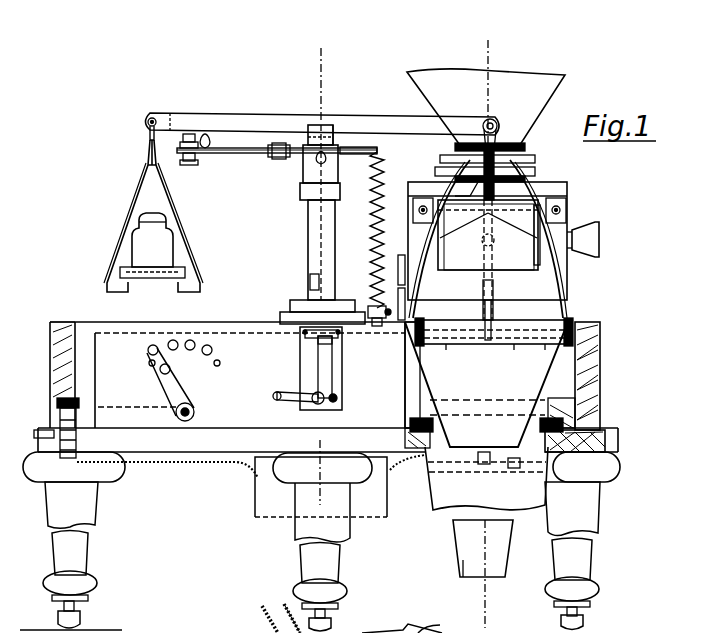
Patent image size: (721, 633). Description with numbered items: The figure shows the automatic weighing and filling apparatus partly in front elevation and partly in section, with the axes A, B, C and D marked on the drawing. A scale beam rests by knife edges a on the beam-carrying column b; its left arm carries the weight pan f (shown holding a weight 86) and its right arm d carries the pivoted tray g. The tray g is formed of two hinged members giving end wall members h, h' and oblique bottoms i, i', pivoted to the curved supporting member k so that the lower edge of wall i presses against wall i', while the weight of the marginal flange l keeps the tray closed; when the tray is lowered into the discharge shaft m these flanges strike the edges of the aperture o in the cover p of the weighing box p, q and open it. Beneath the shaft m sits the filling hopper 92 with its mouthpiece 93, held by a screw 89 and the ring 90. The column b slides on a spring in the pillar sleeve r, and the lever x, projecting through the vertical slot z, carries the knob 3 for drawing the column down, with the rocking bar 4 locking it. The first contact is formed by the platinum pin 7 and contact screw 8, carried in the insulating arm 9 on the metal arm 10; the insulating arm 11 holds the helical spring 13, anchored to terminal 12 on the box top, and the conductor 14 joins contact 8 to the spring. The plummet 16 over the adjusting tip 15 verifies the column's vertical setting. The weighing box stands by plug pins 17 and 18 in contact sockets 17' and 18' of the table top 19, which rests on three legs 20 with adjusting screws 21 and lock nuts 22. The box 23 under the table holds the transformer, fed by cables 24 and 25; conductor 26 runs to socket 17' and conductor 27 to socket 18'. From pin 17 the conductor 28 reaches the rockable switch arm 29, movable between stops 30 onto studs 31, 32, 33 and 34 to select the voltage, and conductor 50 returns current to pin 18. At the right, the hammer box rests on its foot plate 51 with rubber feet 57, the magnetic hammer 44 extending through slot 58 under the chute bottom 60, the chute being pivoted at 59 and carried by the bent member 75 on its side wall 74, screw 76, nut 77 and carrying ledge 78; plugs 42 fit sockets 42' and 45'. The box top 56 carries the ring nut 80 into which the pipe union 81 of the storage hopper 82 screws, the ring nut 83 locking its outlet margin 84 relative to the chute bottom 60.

The knob 3 is at (308, 336).
The rocking bar 4 is at (282, 394).
The platinum pin 7 is at (187, 133).
The contact screw 8 is at (205, 142).
The insulating arm 9 is at (209, 155).
The metal arm 10 is at (287, 160).
The insulating arm 11 is at (355, 155).
The terminal 12 is at (372, 310).
The helical spring 13 is at (372, 228).
The conductor 14 is at (240, 155).
The adjusting tip 15 is at (292, 306).
The plummet 16 is at (310, 290).
The plug pin 17 is at (53, 428).
The contact socket 17' is at (28, 436).
The plug pin 18 is at (587, 408).
The contact socket 18' is at (591, 438).
The table top 19 is at (328, 440).
The legs 20 is at (82, 548).
The adjusting screws 21 is at (80, 622).
The lock nuts 22 is at (90, 600).
The box 23 is at (258, 495).
The cable 24 is at (262, 620).
The cable 25 is at (283, 606).
The conductor 26 is at (170, 462).
The conductor 27 is at (403, 480).
The conductor 28 is at (110, 407).
The rockable switch arm 29 is at (185, 400).
The stops 30 is at (150, 366).
The stud 31 is at (148, 349).
The stud 32 is at (172, 341).
The stud 33 is at (205, 338).
The stud 34 is at (213, 350).
The plug 42 is at (402, 617).
The plug socket 42' is at (393, 270).
The magnetic hammer 44 is at (495, 276).
The plug socket 45' is at (393, 304).
The conductor 50 is at (597, 365).
The foot plate 51 is at (415, 375).
The box top 56 is at (560, 184).
The india rubber feet 57 is at (410, 425).
The slot 58 is at (483, 296).
The pivot 59 is at (573, 239).
The chute bottom 60 is at (463, 262).
The chute side wall 74 is at (538, 262).
The bent member 75 is at (510, 222).
The screw 76 is at (497, 175).
The nut 77 is at (497, 140).
The carrying ledge 78 is at (461, 186).
The ring nut 80 is at (440, 172).
The pipe union 81 is at (520, 148).
The storage hopper 82 is at (486, 108).
The ring nut 83 is at (452, 158).
The outlet margin 84 is at (462, 210).
The weight 86 is at (152, 240).
The screw 89 is at (483, 462).
The ring 90 is at (515, 462).
The filling hopper 92 is at (433, 483).
The mouthpiece 93 is at (465, 578).
The axis A is at (477, 95).
The axis B is at (473, 574).
The axis C is at (306, 85).
The axis D is at (307, 476).
The knife edges a is at (326, 118).
The beam-carrying column b is at (336, 129).
The right arm of scale beam d is at (385, 122).
The weight pan f is at (152, 274).
The pivoted tray g is at (498, 313).
The end wall member h is at (507, 318).
The end wall member h' is at (539, 356).
The oblique bottom i is at (513, 352).
The oblique bottom i' is at (446, 356).
The curved supporting member k is at (439, 239).
The marginal flange l is at (538, 239).
The discharge shaft m is at (426, 384).
The aperture o is at (578, 325).
The cover of weighing box p is at (238, 322).
The weighing box q is at (250, 380).
The pillar sleeve r is at (311, 228).
The lever x is at (335, 340).
The vertical slot z is at (325, 376).